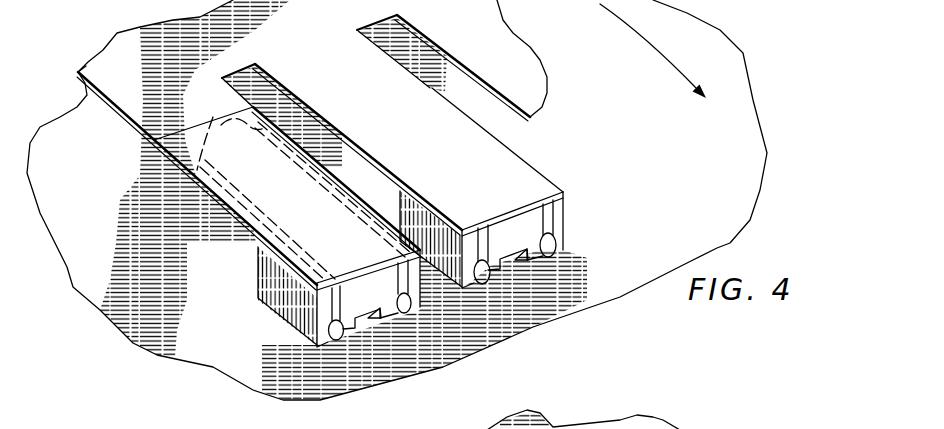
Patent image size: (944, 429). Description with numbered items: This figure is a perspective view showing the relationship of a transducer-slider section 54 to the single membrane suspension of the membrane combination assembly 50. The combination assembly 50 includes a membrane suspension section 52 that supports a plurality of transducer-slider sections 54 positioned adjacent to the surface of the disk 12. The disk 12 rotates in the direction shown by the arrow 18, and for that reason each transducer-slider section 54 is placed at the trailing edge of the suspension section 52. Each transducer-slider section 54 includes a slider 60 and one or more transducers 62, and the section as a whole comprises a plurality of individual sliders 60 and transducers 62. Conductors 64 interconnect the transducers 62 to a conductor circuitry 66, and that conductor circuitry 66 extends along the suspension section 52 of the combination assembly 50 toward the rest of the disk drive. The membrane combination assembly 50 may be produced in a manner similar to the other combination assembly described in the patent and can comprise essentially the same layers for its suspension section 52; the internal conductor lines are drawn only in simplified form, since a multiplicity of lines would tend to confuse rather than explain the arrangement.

The disk 12 is at (632, 269).
The arrow 18 is at (654, 42).
The combination transducer-slider-suspension 50 is at (328, 37).
The membrane suspension section 52 is at (190, 193).
The transducer-slider section 54 is at (272, 320).
The slider 60 is at (567, 215).
The transducer 62 is at (406, 313).
The conductor 64 is at (328, 337).
The conductor circuitry 66 is at (219, 126).